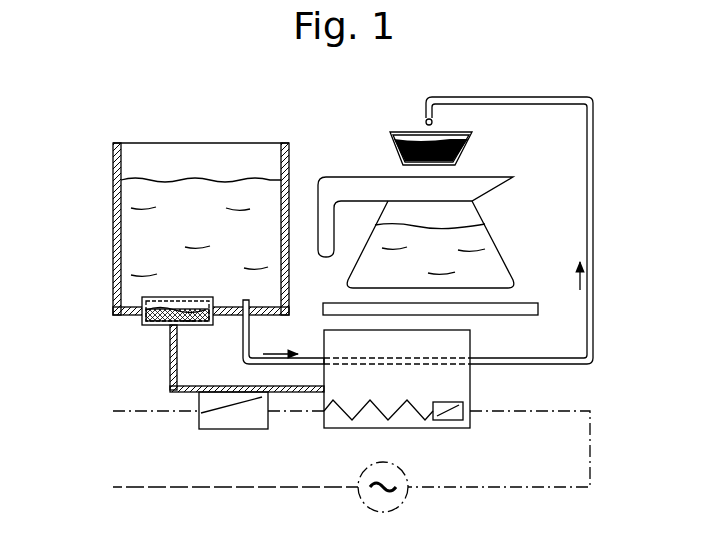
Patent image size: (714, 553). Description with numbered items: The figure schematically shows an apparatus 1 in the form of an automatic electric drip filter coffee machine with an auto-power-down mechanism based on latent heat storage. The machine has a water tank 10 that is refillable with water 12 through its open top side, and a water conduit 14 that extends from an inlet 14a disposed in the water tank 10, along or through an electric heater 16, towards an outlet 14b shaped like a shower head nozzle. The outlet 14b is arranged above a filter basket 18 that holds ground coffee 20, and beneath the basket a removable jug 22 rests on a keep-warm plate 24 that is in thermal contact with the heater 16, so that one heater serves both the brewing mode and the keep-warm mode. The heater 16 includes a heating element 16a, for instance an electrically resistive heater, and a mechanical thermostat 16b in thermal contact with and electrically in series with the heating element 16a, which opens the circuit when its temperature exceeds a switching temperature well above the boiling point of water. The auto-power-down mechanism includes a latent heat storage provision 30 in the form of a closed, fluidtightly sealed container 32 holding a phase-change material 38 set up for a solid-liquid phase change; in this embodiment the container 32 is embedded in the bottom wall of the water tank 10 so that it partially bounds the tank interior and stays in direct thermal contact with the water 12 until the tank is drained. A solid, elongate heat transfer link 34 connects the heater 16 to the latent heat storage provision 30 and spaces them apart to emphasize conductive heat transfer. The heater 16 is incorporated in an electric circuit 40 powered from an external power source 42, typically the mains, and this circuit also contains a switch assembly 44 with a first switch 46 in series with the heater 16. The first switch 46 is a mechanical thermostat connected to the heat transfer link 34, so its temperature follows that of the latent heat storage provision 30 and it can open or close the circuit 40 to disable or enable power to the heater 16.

The apparatus 1 is at (80, 135).
The water tank 10 is at (155, 229).
The water 12 is at (198, 222).
The water conduit 14 is at (459, 226).
The inlet 14a is at (247, 301).
The outlet 14b is at (426, 110).
The electric heater 16 is at (430, 398).
The heating element 16a is at (373, 422).
The thermostat 16b is at (452, 420).
The filter basket 18 is at (428, 137).
The ground coffee 20 is at (478, 140).
The jug 22 is at (502, 221).
The keep-warm plate 24 is at (487, 316).
The latent heat storage provision 30 is at (118, 338).
The container 32 is at (157, 327).
The heat transfer link 34 is at (168, 377).
The phase-change material 38 is at (186, 326).
The electric circuit 40 is at (302, 461).
The external power source 42 is at (393, 505).
The switch assembly 44 is at (193, 431).
The first switch 46 is at (245, 420).